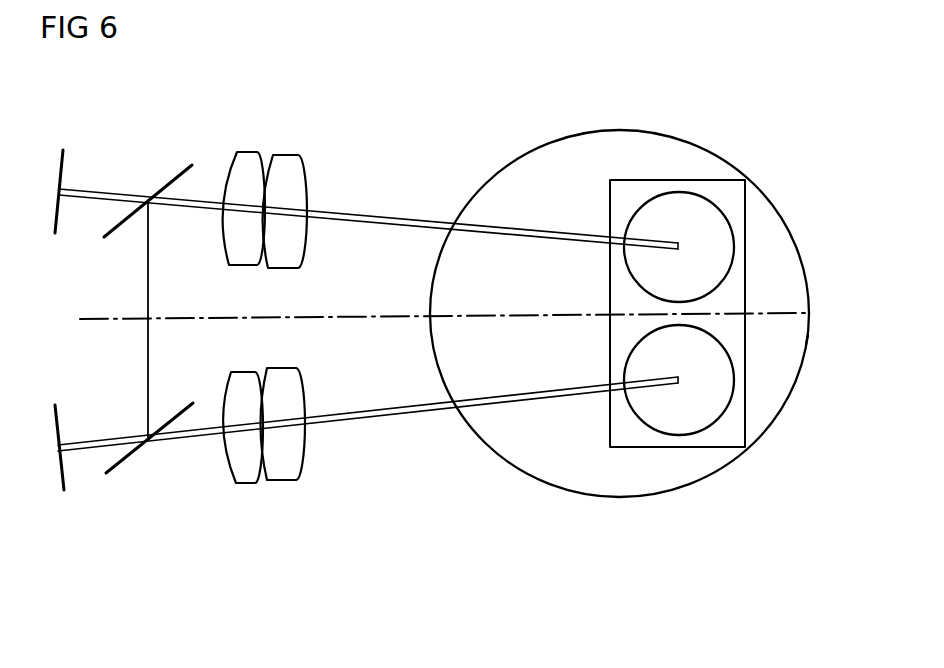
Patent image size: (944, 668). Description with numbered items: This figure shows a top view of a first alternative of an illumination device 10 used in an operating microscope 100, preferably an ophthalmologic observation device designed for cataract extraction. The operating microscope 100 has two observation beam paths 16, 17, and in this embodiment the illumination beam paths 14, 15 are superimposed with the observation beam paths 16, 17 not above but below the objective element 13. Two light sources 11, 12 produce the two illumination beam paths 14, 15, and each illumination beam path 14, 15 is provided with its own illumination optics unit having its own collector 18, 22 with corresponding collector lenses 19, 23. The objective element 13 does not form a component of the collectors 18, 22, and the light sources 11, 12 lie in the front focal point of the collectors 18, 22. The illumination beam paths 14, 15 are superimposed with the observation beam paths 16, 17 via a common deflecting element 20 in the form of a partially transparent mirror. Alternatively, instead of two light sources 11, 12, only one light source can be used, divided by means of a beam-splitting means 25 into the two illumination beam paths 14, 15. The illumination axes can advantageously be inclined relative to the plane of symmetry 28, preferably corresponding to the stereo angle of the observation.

The illumination device 10 is at (237, 77).
The light source 11 is at (62, 171).
The light source 12 is at (58, 418).
The objective element 13 is at (808, 341).
The illumination beam path 14 is at (380, 224).
The illumination beam path 15 is at (418, 411).
The observation beam path 16 is at (734, 247).
The observation beam path 17 is at (734, 380).
The collector 18 is at (306, 168).
The collector lens 19 is at (290, 152).
The deflecting element 20 is at (610, 344).
The collector 22 is at (304, 461).
The collector lens 23 is at (253, 485).
The beam-splitting means 25 is at (107, 297).
The plane of symmetry 28 is at (371, 322).
The operating microscope 100 is at (741, 94).